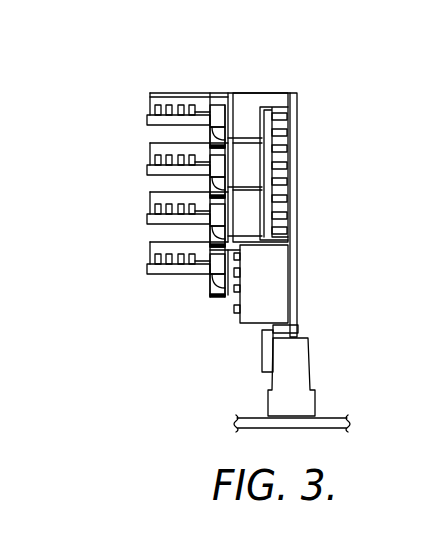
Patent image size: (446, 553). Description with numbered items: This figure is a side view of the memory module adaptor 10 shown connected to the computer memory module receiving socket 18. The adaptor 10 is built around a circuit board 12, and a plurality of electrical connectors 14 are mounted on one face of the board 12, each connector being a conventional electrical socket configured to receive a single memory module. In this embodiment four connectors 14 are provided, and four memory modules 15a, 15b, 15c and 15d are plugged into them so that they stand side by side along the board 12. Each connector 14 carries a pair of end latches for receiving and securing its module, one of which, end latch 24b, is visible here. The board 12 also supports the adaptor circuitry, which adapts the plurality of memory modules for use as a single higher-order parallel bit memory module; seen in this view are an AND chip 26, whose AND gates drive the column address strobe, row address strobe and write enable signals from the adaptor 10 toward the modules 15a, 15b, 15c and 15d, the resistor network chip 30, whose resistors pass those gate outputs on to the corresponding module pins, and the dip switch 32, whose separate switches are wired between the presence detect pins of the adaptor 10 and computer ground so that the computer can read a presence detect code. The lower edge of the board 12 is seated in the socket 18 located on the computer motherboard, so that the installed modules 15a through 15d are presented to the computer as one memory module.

The memory module adaptor 10 is at (270, 178).
The circuit board 12 is at (300, 128).
The electrical connectors 14 is at (289, 130).
The memory module 15a is at (165, 98).
The memory module 15b is at (150, 170).
The memory module 15c is at (150, 217).
The memory module 15d is at (160, 272).
The memory module receiving socket 18 is at (316, 358).
The end latch 24b is at (210, 290).
The AND chip 26 is at (264, 345).
The resistor network chip 30 is at (270, 188).
The dip switch 32 is at (270, 267).